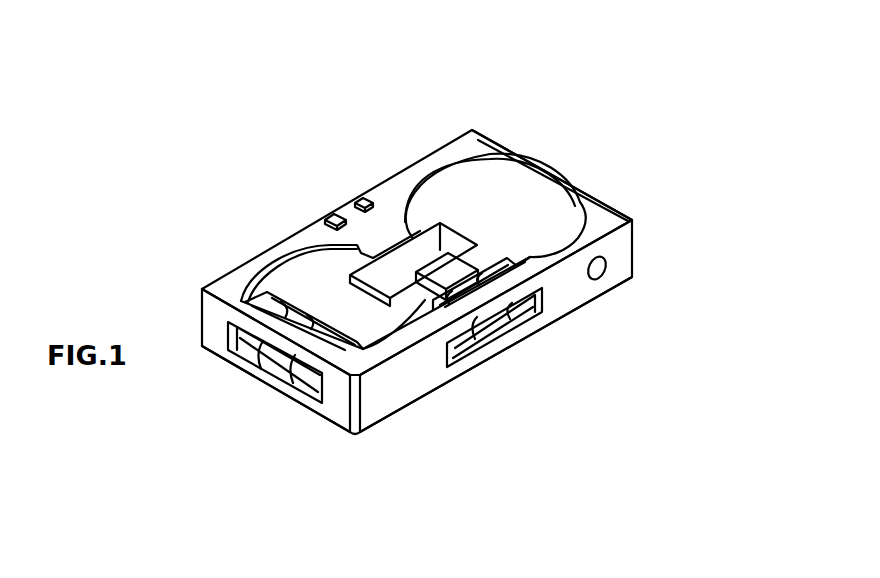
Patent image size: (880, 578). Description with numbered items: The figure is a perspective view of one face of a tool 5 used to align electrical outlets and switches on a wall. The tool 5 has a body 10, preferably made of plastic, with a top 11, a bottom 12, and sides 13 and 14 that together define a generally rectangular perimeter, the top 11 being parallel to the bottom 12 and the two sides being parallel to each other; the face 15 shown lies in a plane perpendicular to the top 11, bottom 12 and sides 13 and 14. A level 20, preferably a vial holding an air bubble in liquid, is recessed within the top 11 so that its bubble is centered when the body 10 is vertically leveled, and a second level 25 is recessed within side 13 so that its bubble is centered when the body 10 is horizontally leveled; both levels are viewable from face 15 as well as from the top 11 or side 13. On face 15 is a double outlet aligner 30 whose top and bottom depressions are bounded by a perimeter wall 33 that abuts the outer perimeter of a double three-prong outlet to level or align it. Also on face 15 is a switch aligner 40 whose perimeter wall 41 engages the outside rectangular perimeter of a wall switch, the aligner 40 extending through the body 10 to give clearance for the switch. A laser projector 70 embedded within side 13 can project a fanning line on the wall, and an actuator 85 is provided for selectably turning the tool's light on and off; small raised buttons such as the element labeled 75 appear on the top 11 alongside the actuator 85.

The tool 5 is at (195, 103).
The body 10 is at (215, 280).
The top 11 is at (220, 330).
The bottom 12 is at (538, 155).
The side 13 is at (413, 380).
The side 14 is at (388, 172).
The face 15 is at (355, 362).
The level 20 is at (277, 357).
The level 25 is at (493, 327).
The double outlet aligner 30 is at (481, 183).
The perimeter wall 33 is at (443, 190).
The switch aligner 40 is at (397, 220).
The perimeter wall 41 is at (463, 226).
The laser projector 70 is at (604, 280).
The first tab 75 is at (327, 213).
The actuator 85 is at (357, 200).